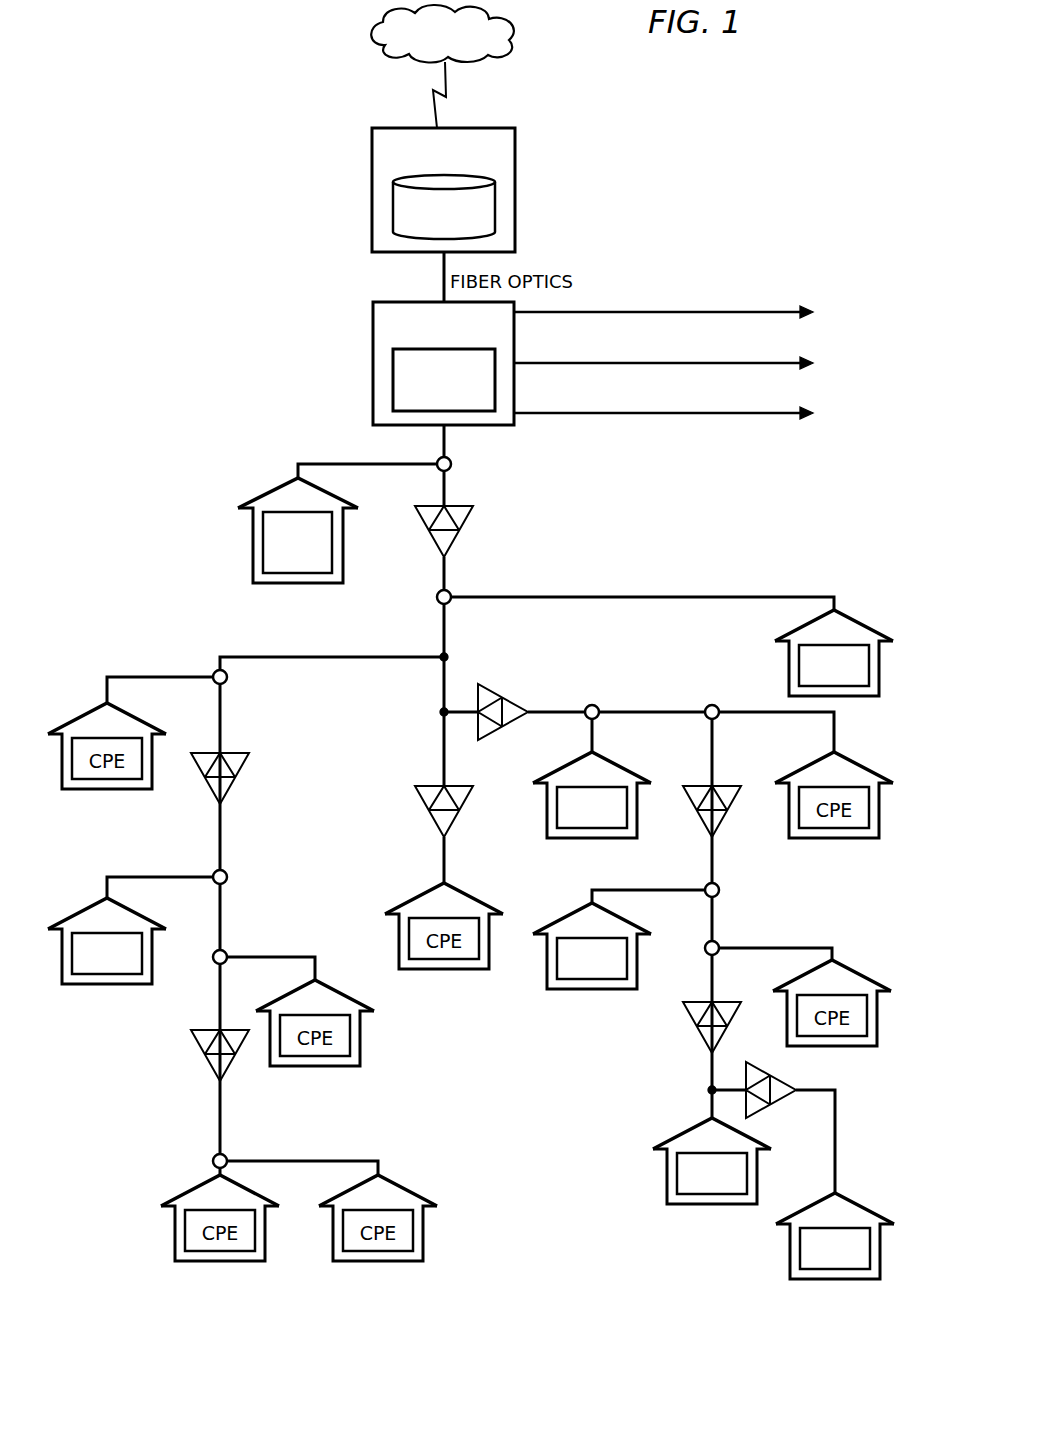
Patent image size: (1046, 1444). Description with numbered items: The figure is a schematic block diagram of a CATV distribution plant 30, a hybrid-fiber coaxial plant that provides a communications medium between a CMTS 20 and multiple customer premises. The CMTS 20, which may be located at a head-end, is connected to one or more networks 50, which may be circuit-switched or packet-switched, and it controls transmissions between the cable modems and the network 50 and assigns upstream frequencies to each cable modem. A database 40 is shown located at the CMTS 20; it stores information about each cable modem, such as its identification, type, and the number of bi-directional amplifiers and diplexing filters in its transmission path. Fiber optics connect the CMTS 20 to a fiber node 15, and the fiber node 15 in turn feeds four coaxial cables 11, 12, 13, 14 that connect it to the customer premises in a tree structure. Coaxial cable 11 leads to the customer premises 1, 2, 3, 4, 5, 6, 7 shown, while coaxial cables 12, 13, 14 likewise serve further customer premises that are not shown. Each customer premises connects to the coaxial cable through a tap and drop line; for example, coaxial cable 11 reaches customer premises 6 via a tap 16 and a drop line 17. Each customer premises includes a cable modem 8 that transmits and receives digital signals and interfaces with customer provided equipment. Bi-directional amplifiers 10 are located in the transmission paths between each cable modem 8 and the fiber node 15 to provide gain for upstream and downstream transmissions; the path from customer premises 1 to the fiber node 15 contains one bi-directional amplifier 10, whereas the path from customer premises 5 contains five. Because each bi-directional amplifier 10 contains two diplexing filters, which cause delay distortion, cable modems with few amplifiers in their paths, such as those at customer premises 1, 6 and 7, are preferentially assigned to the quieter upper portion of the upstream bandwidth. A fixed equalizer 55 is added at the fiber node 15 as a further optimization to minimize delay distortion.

The customer premises 1 is at (870, 628).
The customer premises 2 is at (566, 768).
The customer premises 3 is at (565, 915).
The customer premises 4 is at (680, 1136).
The customer premises 5 is at (862, 1212).
The customer premises 6 is at (283, 486).
The customer premises 7 is at (85, 907).
The cable modem 8 is at (289, 512).
The bi-directional amplifier 10 is at (463, 530).
The coaxial cable 11 is at (443, 448).
The coaxial cable 12 is at (653, 412).
The coaxial cable 13 is at (702, 362).
The coaxial cable 14 is at (653, 311).
The fiber node 15 is at (392, 302).
The tap 16 is at (452, 461).
The drop line 17 is at (333, 463).
The CMTS 20 is at (392, 128).
The CATV distribution plant 30 is at (660, 145).
The database 40 is at (450, 176).
The network 50 is at (372, 31).
The fixed equalizer 55 is at (455, 349).